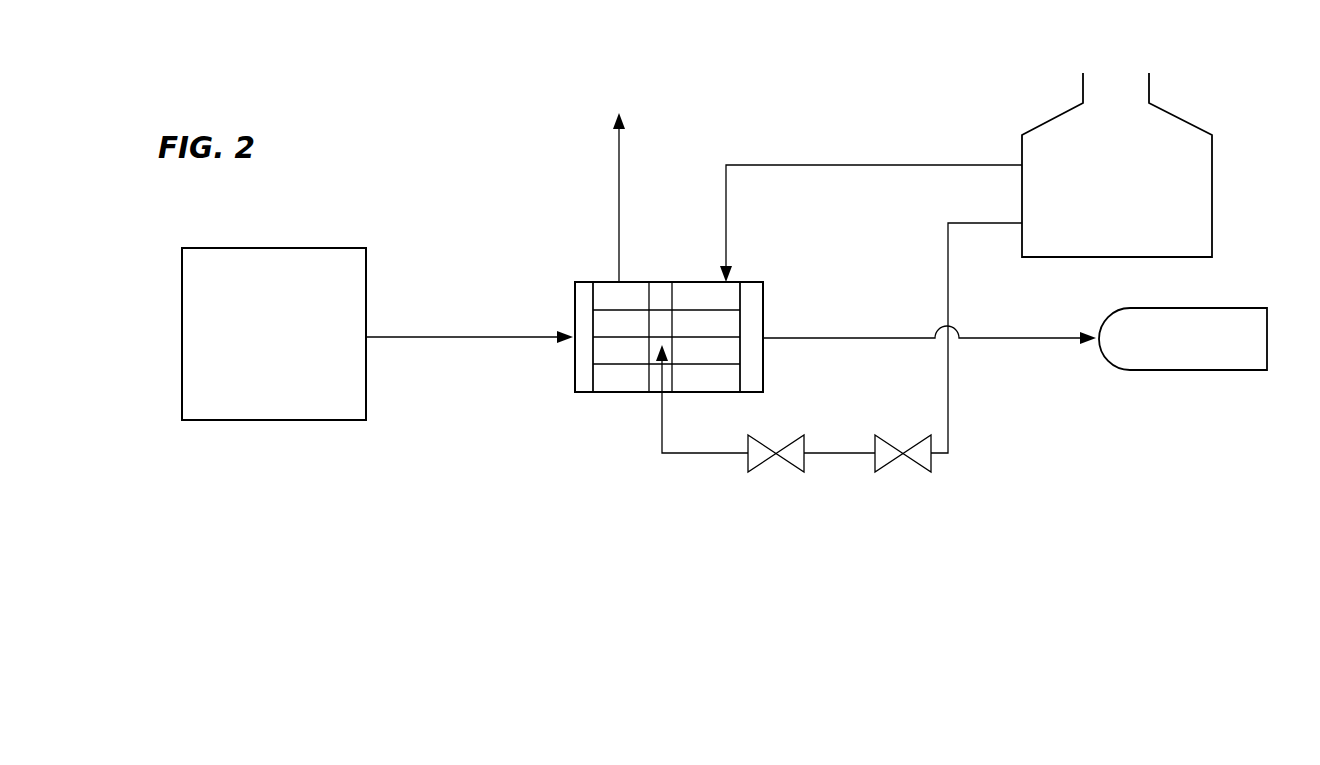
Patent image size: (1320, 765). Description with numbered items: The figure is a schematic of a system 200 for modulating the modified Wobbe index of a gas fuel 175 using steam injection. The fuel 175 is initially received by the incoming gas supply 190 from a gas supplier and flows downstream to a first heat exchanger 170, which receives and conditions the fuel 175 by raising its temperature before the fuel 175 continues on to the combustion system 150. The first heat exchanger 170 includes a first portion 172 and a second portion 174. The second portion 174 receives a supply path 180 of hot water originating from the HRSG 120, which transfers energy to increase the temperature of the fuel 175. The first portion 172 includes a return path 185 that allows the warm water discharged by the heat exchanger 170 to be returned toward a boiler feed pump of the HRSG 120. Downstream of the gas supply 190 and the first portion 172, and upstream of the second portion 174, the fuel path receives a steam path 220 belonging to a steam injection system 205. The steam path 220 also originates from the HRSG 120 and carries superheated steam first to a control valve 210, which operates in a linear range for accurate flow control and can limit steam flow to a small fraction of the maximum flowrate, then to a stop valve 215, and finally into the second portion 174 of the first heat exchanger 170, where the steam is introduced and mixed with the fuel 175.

The system 200 is at (440, 78).
The incoming gas supply 190 is at (274, 334).
The fuel 175 is at (427, 337).
The first heat exchanger 170 is at (578, 280).
The first portion 172 is at (612, 384).
The second portion 174 is at (708, 380).
The return path 185 is at (619, 174).
The supply path 180 is at (832, 162).
The HRSG 120 is at (1117, 165).
The combustion system 150 is at (1177, 371).
The steam path 220 is at (948, 390).
The stop valve 215 is at (803, 473).
The control valve 210 is at (930, 473).
The steam injection system 205 is at (982, 543).